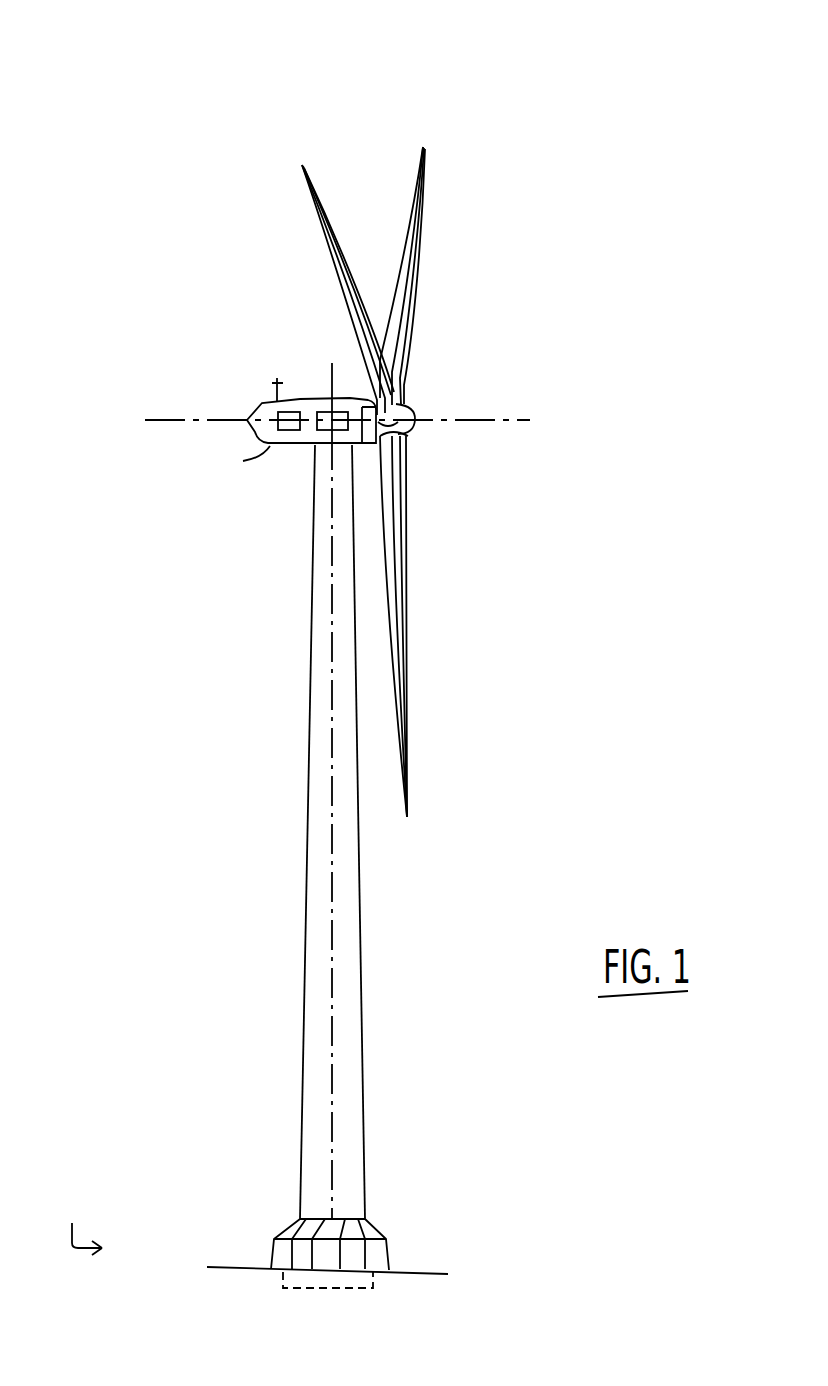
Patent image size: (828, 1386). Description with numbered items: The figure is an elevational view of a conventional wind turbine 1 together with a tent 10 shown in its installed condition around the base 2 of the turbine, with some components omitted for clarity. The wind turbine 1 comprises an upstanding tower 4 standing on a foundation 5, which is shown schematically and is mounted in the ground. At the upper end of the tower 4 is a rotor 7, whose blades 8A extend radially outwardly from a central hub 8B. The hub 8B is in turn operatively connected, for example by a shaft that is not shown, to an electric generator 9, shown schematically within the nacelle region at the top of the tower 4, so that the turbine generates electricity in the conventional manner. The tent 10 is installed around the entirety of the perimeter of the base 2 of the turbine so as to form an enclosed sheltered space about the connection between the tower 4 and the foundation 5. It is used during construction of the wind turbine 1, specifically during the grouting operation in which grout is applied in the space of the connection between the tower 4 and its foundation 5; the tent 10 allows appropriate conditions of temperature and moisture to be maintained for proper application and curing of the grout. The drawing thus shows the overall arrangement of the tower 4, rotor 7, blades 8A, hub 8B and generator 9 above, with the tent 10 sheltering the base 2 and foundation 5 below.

The wind turbine 1 is at (368, 70).
The base 2 is at (82, 1221).
The tower 4 is at (302, 1013).
The foundation 5 is at (373, 1275).
The rotor 7 is at (422, 392).
The blades 8A is at (322, 232).
The central hub 8B is at (405, 433).
The electric generator 9 is at (302, 407).
The tent 10 is at (383, 1232).